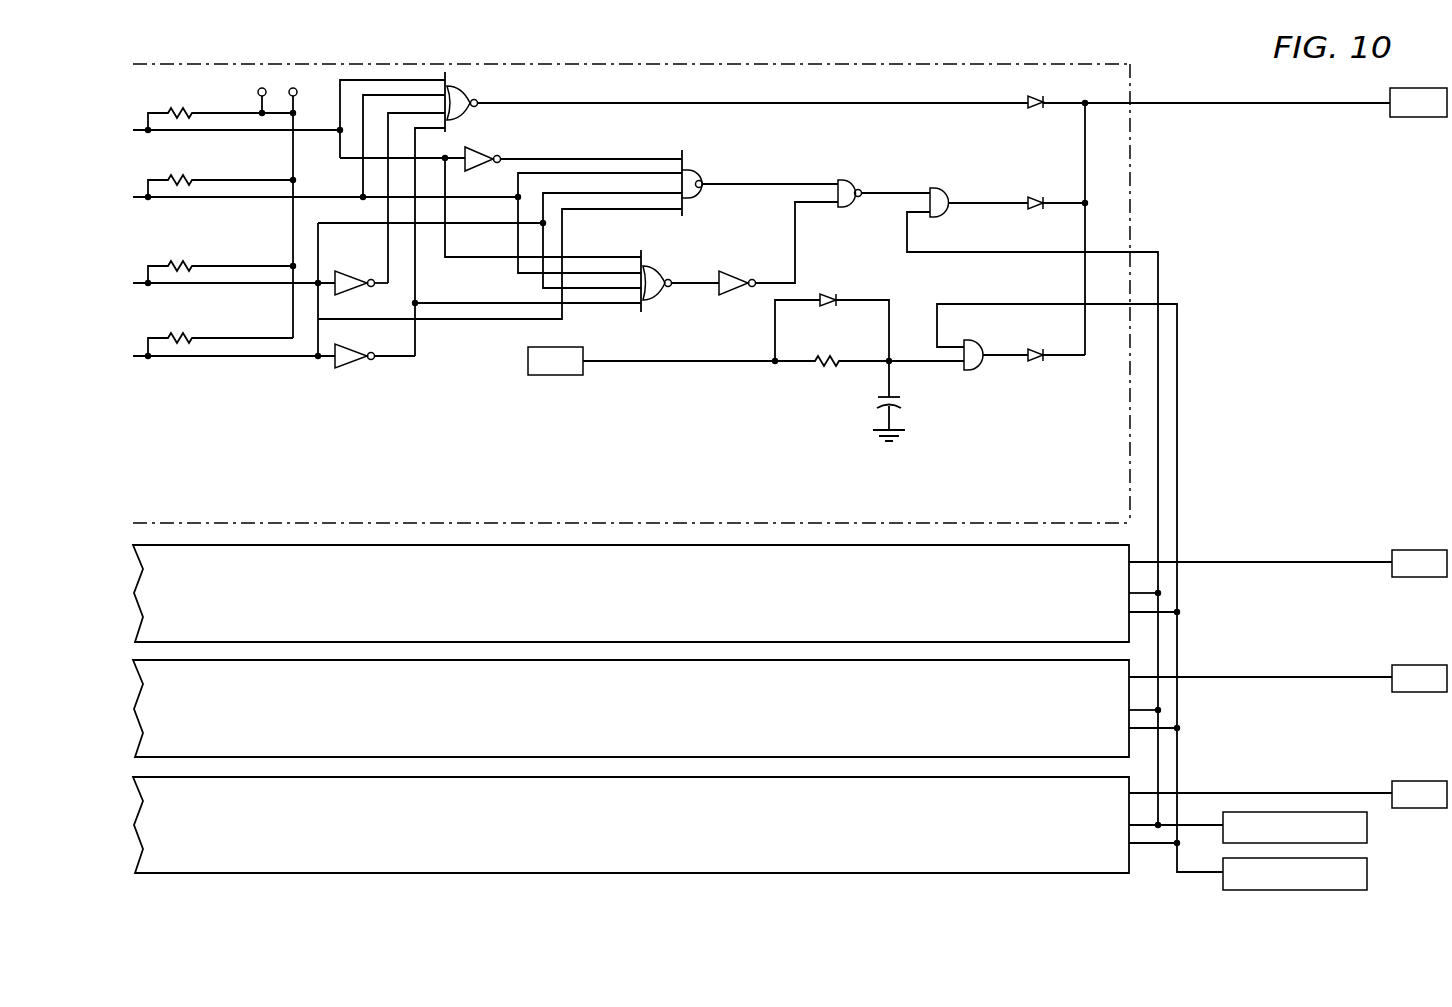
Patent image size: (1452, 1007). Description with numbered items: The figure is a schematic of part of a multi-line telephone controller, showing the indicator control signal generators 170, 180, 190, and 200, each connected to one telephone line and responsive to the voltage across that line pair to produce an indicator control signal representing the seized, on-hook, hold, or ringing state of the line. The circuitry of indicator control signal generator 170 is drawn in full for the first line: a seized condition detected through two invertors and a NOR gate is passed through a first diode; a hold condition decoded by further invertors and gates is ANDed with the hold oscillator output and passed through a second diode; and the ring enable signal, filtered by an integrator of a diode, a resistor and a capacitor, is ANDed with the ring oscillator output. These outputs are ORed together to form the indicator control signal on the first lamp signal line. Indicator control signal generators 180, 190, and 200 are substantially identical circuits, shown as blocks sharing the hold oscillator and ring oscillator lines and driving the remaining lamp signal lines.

The indicator control signal generator 170 is at (190, 511).
The indicator control signal generator 180 is at (190, 626).
The indicator control signal generator 190 is at (190, 742).
The indicator control signal generator 200 is at (190, 857).